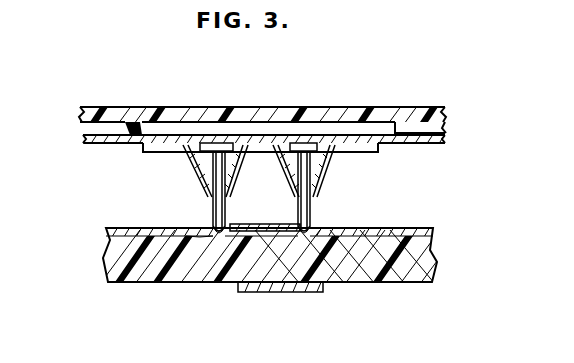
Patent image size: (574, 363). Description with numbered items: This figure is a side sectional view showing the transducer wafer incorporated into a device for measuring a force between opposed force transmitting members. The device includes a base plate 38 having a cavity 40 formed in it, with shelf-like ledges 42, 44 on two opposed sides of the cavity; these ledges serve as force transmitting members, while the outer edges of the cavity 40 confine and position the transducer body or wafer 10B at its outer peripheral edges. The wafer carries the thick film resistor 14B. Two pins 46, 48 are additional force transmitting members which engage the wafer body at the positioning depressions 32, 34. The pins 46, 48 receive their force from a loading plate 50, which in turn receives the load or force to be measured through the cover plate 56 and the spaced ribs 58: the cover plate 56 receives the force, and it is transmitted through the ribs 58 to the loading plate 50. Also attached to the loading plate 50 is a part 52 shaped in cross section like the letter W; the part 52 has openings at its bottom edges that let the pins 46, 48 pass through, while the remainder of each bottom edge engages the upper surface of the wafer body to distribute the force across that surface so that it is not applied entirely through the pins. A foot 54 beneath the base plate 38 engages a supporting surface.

The cover plate 56 is at (132, 110).
The spaced ribs 58 is at (384, 133).
The loading plate 50 is at (432, 137).
The W-shaped part 52 is at (333, 156).
The pin 46 is at (213, 162).
The pin 48 is at (322, 210).
The thick film resistor 14B is at (258, 223).
The transducer body or wafer 10B is at (184, 228).
The base plate 38 is at (428, 241).
The shelf-like ledge 42 is at (178, 238).
The positioning depression 32 is at (187, 238).
The cavity 40 is at (227, 240).
The positioning depression 34 is at (303, 240).
The foot 54 is at (288, 293).
The shelf-like ledge 44 is at (403, 283).